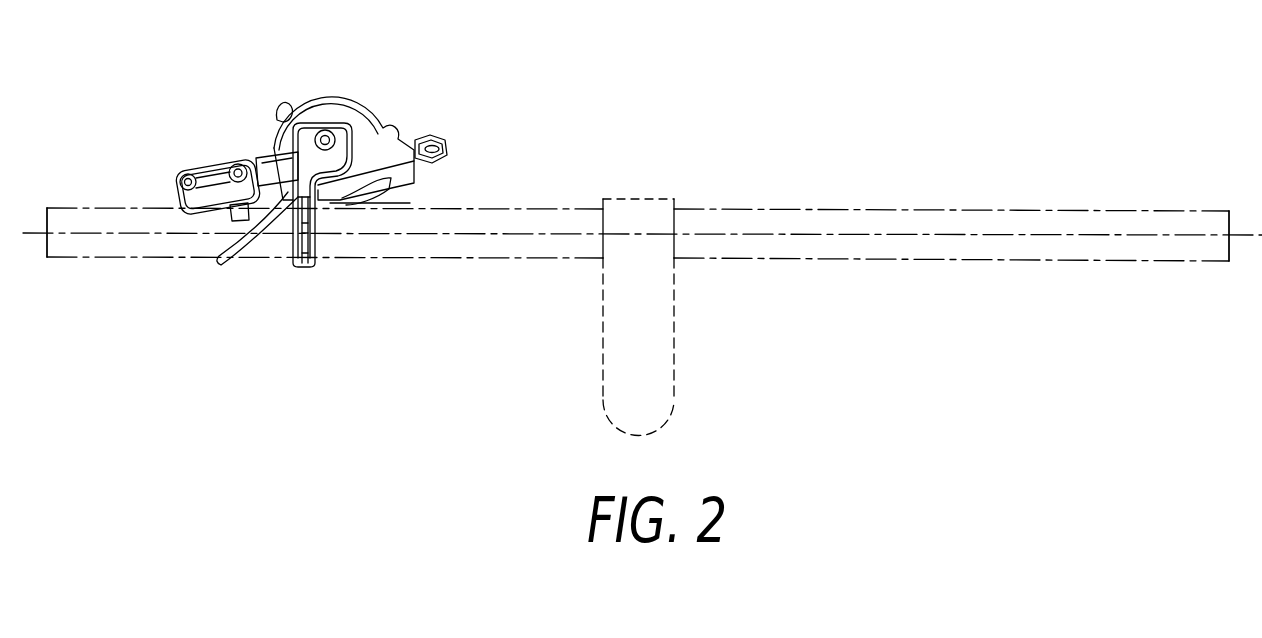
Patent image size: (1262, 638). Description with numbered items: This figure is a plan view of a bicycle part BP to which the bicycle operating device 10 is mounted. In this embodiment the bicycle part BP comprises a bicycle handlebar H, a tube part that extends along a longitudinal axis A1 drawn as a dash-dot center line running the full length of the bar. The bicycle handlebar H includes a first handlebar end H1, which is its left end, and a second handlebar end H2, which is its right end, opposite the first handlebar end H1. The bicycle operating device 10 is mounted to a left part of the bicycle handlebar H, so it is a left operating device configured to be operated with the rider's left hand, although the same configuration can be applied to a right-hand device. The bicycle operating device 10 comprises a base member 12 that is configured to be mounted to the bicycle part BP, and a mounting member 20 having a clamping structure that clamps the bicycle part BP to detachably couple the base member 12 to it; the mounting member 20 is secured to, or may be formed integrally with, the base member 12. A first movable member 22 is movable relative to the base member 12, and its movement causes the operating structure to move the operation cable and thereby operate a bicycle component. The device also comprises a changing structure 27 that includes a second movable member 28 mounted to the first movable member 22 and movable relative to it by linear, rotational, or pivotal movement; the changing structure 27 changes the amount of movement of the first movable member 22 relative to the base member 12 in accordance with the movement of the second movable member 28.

The bicycle operating device 10 is at (405, 76).
The base member 12 is at (350, 88).
The mounting member 20 is at (299, 271).
The first movable member 22 is at (262, 153).
The changing structure 27 is at (172, 148).
The second movable member 28 is at (207, 155).
The bicycle handlebar H is at (708, 209).
The first handlebar end H1 is at (90, 206).
The second handlebar end H2 is at (1229, 207).
The longitudinal axis A1 is at (532, 209).
The bicycle part BP is at (838, 184).